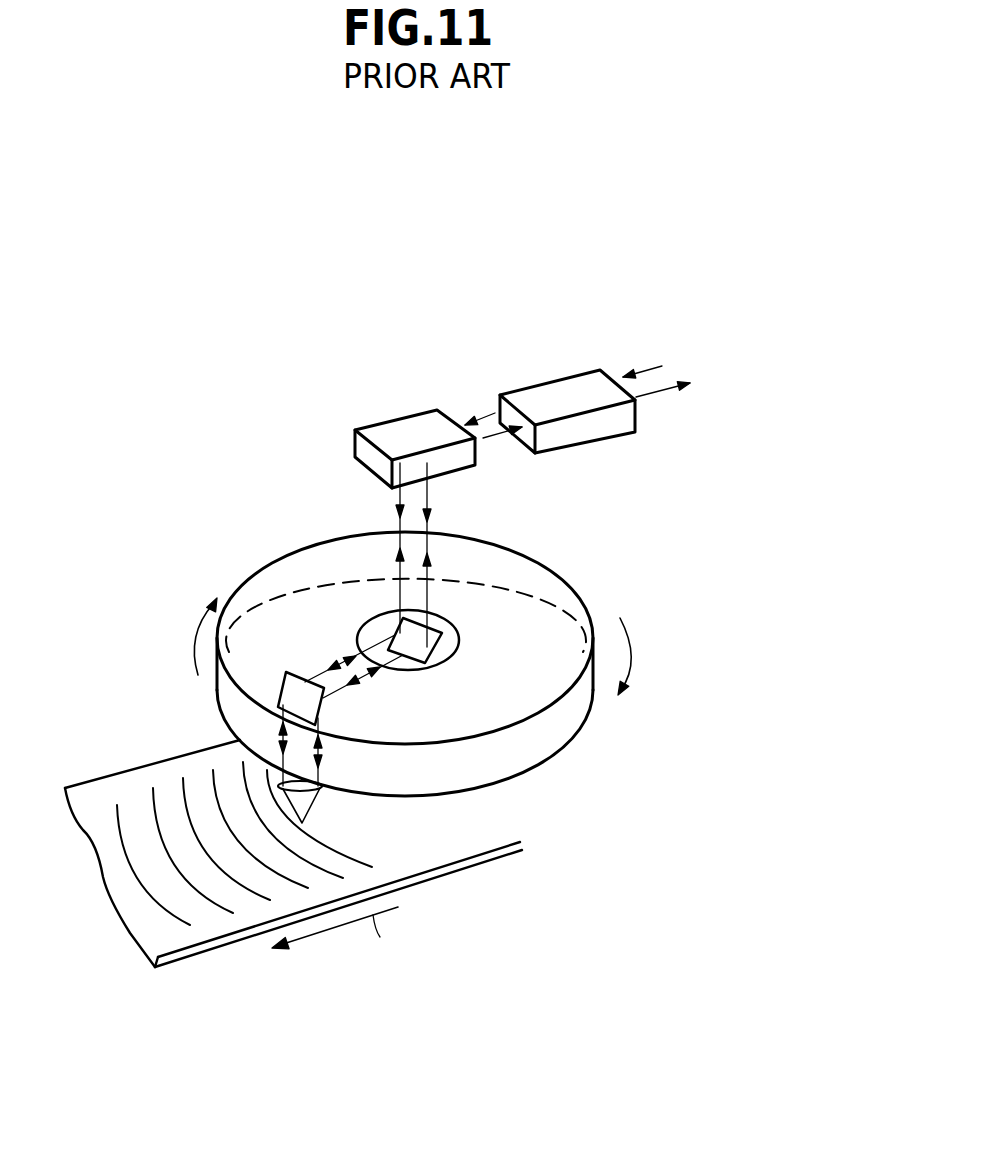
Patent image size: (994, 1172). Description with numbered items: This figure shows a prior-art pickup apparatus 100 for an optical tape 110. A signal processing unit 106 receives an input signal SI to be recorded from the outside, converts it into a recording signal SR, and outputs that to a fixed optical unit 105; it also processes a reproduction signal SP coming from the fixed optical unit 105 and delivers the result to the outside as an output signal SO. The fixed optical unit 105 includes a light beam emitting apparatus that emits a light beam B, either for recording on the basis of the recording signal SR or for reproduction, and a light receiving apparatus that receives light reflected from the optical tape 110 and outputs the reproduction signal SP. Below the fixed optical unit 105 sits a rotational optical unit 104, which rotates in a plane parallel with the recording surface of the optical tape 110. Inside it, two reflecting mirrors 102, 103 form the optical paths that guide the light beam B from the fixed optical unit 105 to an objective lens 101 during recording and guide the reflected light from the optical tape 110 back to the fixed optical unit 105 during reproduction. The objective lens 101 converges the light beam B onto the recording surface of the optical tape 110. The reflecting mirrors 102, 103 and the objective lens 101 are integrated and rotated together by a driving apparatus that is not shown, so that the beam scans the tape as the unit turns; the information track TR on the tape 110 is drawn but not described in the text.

The pickup apparatus 100 is at (345, 200).
The objective lens 101 is at (322, 786).
The reflecting mirror 102 is at (283, 680).
The reflecting mirror 103 is at (440, 636).
The rotational optical unit 104 is at (562, 727).
The fixed optical unit 105 is at (375, 422).
The signal processing unit 106 is at (598, 370).
The optical tape 110 is at (368, 878).
The light beam B is at (430, 522).
The recording signal SR is at (487, 413).
The reproduction signal SP is at (497, 433).
The input signal SI is at (628, 372).
The output signal SO is at (658, 393).
The information track TR is at (217, 908).